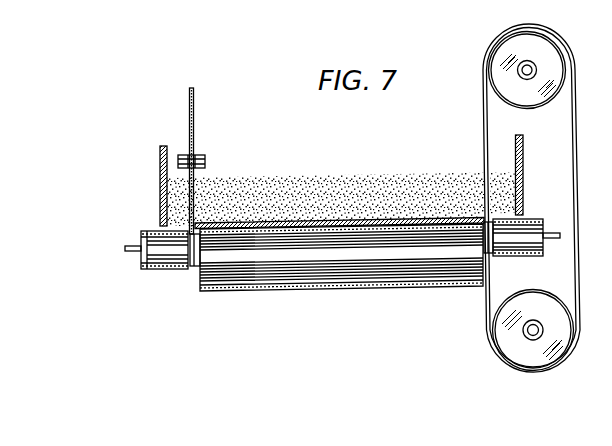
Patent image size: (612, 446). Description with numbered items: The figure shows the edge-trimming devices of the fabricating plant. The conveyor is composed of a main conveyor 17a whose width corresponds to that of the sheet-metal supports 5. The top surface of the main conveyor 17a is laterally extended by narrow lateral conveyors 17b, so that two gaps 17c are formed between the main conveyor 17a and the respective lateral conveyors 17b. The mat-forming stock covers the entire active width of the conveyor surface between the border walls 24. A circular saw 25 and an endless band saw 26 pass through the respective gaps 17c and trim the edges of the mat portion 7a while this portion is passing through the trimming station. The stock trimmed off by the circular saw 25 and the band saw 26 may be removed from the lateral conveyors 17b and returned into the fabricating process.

The sheet-metal support 5 is at (252, 224).
The mat portion 7a is at (358, 192).
The main conveyor 17a is at (347, 273).
The lateral conveyor 17b is at (152, 270).
The gap 17c is at (195, 267).
The border wall 24 is at (160, 161).
The circular saw 25 is at (195, 128).
The endless band saw 26 is at (576, 139).